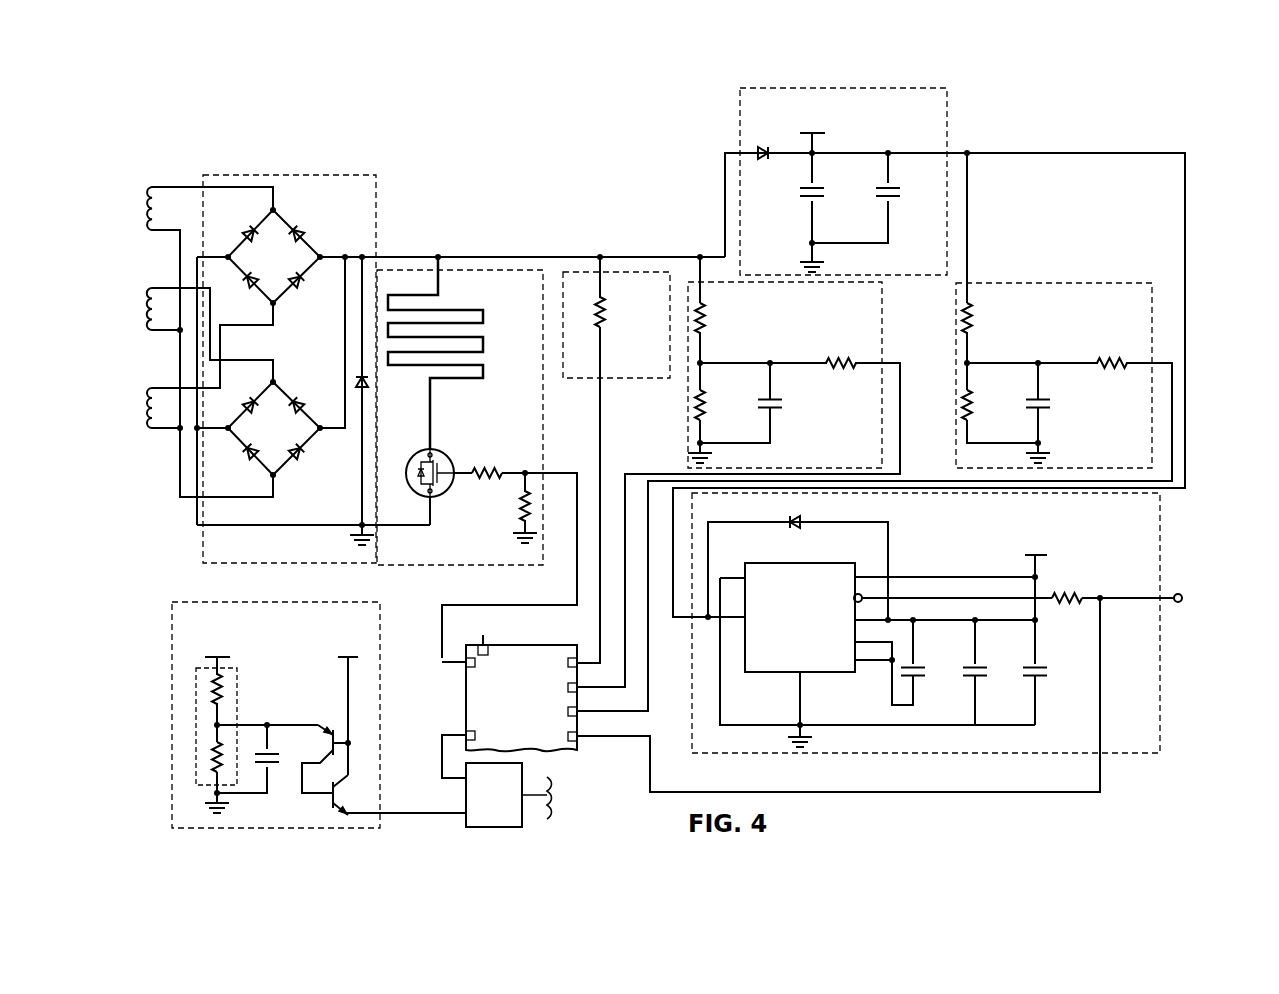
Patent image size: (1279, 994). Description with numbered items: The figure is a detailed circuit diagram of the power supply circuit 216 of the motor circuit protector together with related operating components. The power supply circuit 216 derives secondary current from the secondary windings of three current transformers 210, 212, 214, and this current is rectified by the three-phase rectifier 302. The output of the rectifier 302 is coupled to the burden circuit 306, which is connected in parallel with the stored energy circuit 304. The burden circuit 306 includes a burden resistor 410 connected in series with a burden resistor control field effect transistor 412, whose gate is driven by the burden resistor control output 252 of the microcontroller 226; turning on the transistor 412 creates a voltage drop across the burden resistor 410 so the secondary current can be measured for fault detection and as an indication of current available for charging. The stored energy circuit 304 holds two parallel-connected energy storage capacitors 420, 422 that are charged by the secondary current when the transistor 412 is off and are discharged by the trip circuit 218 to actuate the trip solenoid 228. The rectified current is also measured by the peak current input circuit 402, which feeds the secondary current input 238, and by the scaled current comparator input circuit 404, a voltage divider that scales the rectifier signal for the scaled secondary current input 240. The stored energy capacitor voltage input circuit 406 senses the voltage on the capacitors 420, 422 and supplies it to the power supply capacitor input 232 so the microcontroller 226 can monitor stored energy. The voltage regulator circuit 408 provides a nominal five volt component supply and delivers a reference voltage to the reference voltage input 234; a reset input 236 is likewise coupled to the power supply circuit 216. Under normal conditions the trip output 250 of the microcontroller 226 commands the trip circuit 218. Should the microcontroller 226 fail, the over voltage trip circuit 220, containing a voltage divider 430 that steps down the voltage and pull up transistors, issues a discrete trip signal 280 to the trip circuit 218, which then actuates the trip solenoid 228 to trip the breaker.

The power supply circuit 216 is at (229, 90).
The current transformer 210 is at (160, 203).
The current transformer 212 is at (160, 303).
The current transformer 214 is at (160, 413).
The three-phase rectifier 302 is at (255, 174).
The stored energy circuit 304 is at (738, 118).
The burden circuit 306 is at (437, 565).
The burden resistor 410 is at (432, 293).
The burden resistor control field effect transistor 412 is at (438, 497).
The energy storage capacitor 420 is at (882, 188).
The energy storage capacitor 422 is at (806, 197).
The peak current input circuit 402 is at (610, 380).
The scaled current comparator input circuit 404 is at (688, 418).
The stored energy capacitor voltage input circuit 406 is at (1098, 283).
The voltage regulator circuit 408 is at (752, 757).
The over voltage trip circuit 220 is at (230, 600).
The voltage divider 430 is at (237, 695).
The microcontroller 226 is at (553, 748).
The reference voltage input 234 is at (478, 650).
The secondary current input 238 is at (568, 662).
The scaled secondary current input 240 is at (568, 687).
The power supply capacitor input 232 is at (568, 711).
The reset input 236 is at (568, 736).
The burden resistor control output 252 is at (466, 664).
The trip output 250 is at (466, 735).
The discrete trip signal 280 is at (418, 812).
The trip circuit 218 is at (510, 805).
The trip solenoid 228 is at (560, 785).